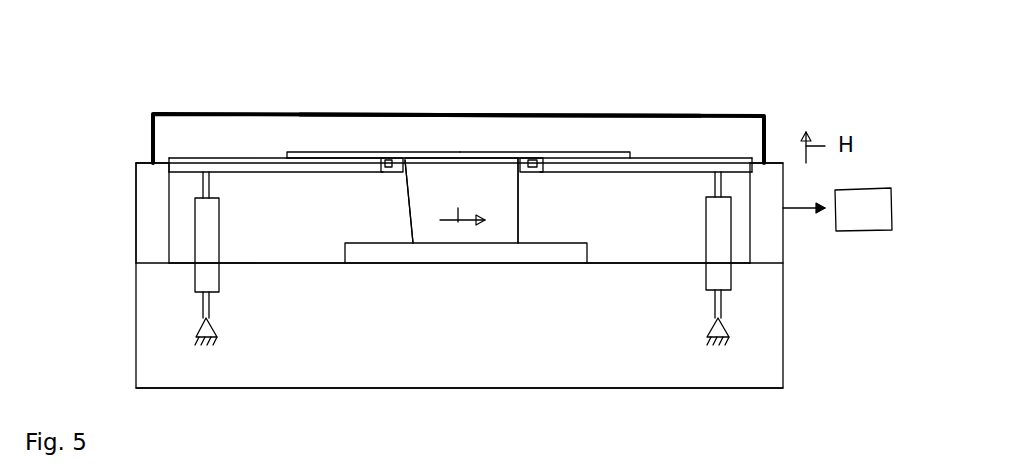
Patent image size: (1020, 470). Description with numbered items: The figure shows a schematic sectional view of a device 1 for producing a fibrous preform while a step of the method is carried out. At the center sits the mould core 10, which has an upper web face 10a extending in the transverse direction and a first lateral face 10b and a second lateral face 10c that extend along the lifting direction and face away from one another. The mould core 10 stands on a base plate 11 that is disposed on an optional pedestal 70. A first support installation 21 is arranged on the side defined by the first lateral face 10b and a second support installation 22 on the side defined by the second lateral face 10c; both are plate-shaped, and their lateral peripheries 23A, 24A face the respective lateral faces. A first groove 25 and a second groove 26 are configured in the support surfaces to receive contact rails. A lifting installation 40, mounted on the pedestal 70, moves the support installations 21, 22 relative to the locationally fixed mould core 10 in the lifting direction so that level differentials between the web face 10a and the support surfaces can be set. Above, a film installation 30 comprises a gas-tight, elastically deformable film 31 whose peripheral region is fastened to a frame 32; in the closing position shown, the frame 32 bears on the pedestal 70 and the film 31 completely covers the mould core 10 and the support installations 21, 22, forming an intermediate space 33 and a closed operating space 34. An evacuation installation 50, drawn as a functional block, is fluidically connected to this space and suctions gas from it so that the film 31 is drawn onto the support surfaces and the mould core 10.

The device 1 is at (827, 78).
The mould core 10 is at (430, 274).
The web face 10a is at (454, 155).
The first lateral face 10b is at (403, 196).
The second lateral face 10c is at (522, 195).
The base plate 11 is at (570, 253).
The first support installation 21 is at (253, 182).
The second support installation 22 is at (666, 188).
The lateral periphery of the first support installation 23A is at (405, 173).
The lateral periphery of the second support installation 24A is at (517, 157).
The first groove 25 is at (386, 170).
The second groove 26 is at (538, 170).
The film installation 30 is at (94, 157).
The film 31 is at (727, 115).
The frame 32 is at (135, 212).
The intermediate space 33 is at (240, 146).
The operating space 34 is at (283, 255).
The lifting installation 40 is at (162, 308).
The evacuation installation 50 is at (867, 230).
The pedestal 70 is at (753, 377).